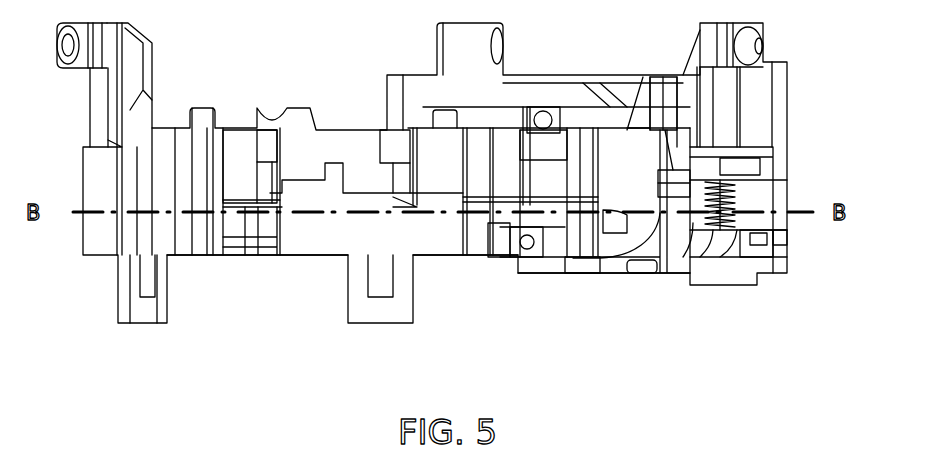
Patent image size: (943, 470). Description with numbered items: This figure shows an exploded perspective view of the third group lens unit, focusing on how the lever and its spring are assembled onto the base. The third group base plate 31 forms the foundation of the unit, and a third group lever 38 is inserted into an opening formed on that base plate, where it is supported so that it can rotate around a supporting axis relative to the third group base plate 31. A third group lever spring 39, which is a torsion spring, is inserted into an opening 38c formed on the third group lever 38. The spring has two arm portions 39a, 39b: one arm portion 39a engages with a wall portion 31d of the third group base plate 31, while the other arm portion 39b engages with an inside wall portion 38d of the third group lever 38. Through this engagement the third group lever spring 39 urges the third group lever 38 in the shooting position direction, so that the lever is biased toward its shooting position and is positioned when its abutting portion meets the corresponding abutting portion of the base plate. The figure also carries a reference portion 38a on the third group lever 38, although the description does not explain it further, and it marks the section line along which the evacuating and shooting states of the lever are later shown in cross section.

The third group base plate 31 is at (477, 222).
The wall portion 31d is at (567, 262).
The third group lever 38 is at (751, 240).
The lock piece 38a is at (752, 172).
The opening 38c is at (643, 274).
The inside wall portion 38d is at (703, 242).
The third group lever spring 39 is at (668, 237).
The arm portion 39a is at (612, 128).
The arm portion 39b is at (790, 237).